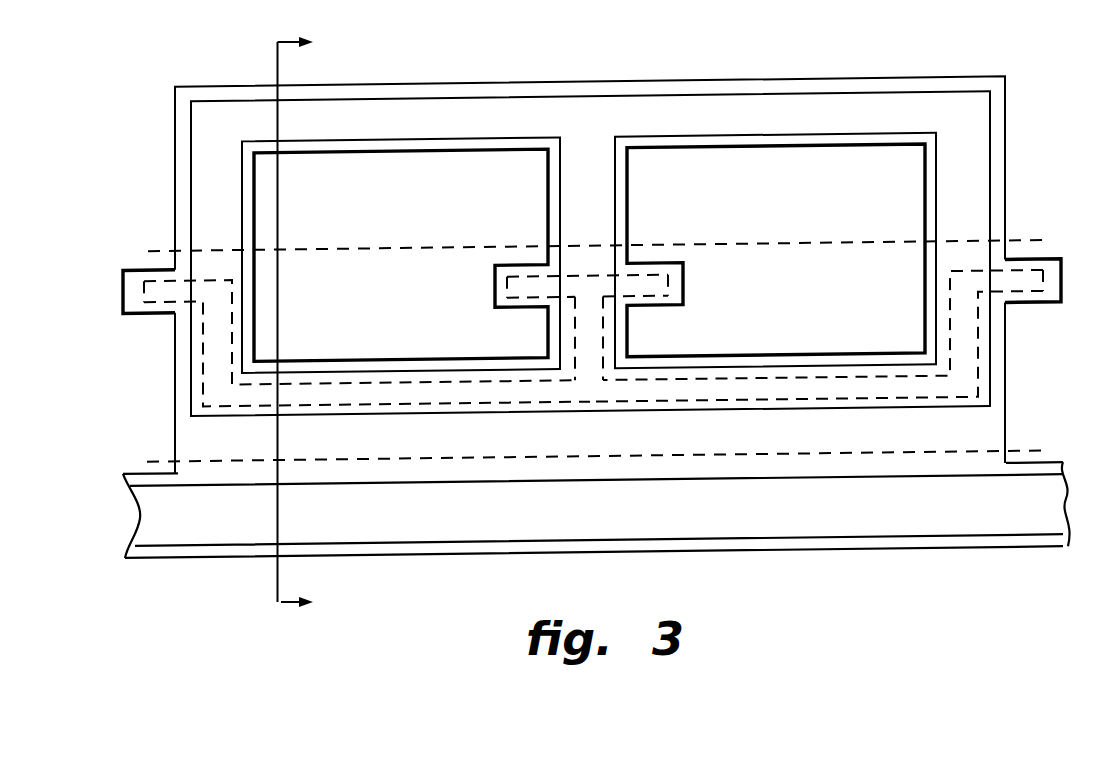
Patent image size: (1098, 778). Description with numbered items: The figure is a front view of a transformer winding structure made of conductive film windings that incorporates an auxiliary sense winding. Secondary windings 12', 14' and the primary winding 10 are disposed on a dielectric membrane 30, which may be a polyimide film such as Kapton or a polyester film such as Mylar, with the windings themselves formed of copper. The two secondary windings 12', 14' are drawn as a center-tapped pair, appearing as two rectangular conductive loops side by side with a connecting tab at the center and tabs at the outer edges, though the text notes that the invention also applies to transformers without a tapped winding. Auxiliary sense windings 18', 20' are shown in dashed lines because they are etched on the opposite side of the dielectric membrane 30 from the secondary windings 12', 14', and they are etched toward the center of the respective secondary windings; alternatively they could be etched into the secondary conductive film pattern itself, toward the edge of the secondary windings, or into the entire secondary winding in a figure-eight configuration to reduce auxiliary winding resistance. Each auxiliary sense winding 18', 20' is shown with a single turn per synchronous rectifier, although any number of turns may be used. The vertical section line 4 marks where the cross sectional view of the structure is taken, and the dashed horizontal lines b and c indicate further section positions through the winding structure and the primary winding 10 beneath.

The primary winding 10 is at (927, 520).
The secondary winding 12' is at (401, 195).
The secondary winding 14' is at (775, 194).
The auxiliary sense winding 18' is at (354, 342).
The auxiliary sense winding 20' is at (794, 336).
The dielectric membrane 30 is at (987, 433).
The section line 4- 4 is at (308, 323).
The section line b- b is at (152, 250).
The section line c- c is at (172, 460).